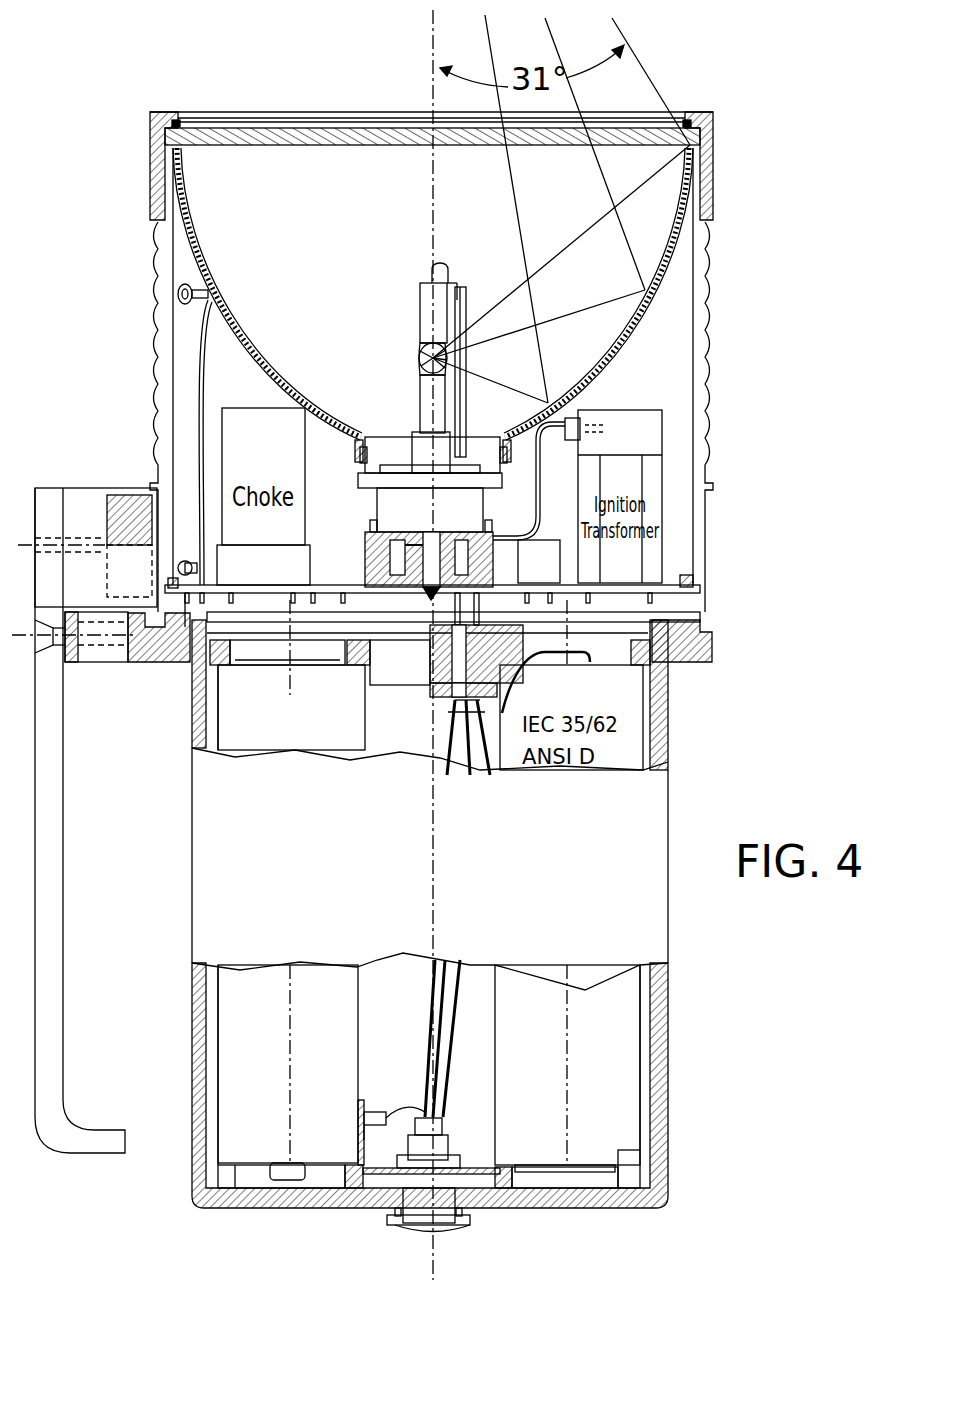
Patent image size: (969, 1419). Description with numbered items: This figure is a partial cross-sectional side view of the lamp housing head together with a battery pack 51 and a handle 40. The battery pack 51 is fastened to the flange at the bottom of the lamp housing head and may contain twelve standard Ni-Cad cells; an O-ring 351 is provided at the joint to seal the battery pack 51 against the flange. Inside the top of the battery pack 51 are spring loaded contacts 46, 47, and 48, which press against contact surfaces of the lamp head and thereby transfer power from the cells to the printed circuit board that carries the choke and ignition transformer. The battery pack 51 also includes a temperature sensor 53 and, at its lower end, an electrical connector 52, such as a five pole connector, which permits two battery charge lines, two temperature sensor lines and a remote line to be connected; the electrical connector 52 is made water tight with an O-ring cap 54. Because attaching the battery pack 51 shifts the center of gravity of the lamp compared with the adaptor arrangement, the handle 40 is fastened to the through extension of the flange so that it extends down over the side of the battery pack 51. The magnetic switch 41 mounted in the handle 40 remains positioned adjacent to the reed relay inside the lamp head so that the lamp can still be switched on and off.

The handle 40 is at (48, 1066).
The magnetic switch 41 is at (89, 507).
The spring loaded contact 46 is at (432, 702).
The spring loaded contact 47 is at (453, 777).
The spring loaded contact 48 is at (498, 713).
The O-ring 351 is at (663, 668).
The battery pack 51 is at (742, 962).
The electrical connector 52 is at (443, 1143).
The temperature sensor 53 is at (378, 1068).
The O-ring cap 54 is at (467, 1217).